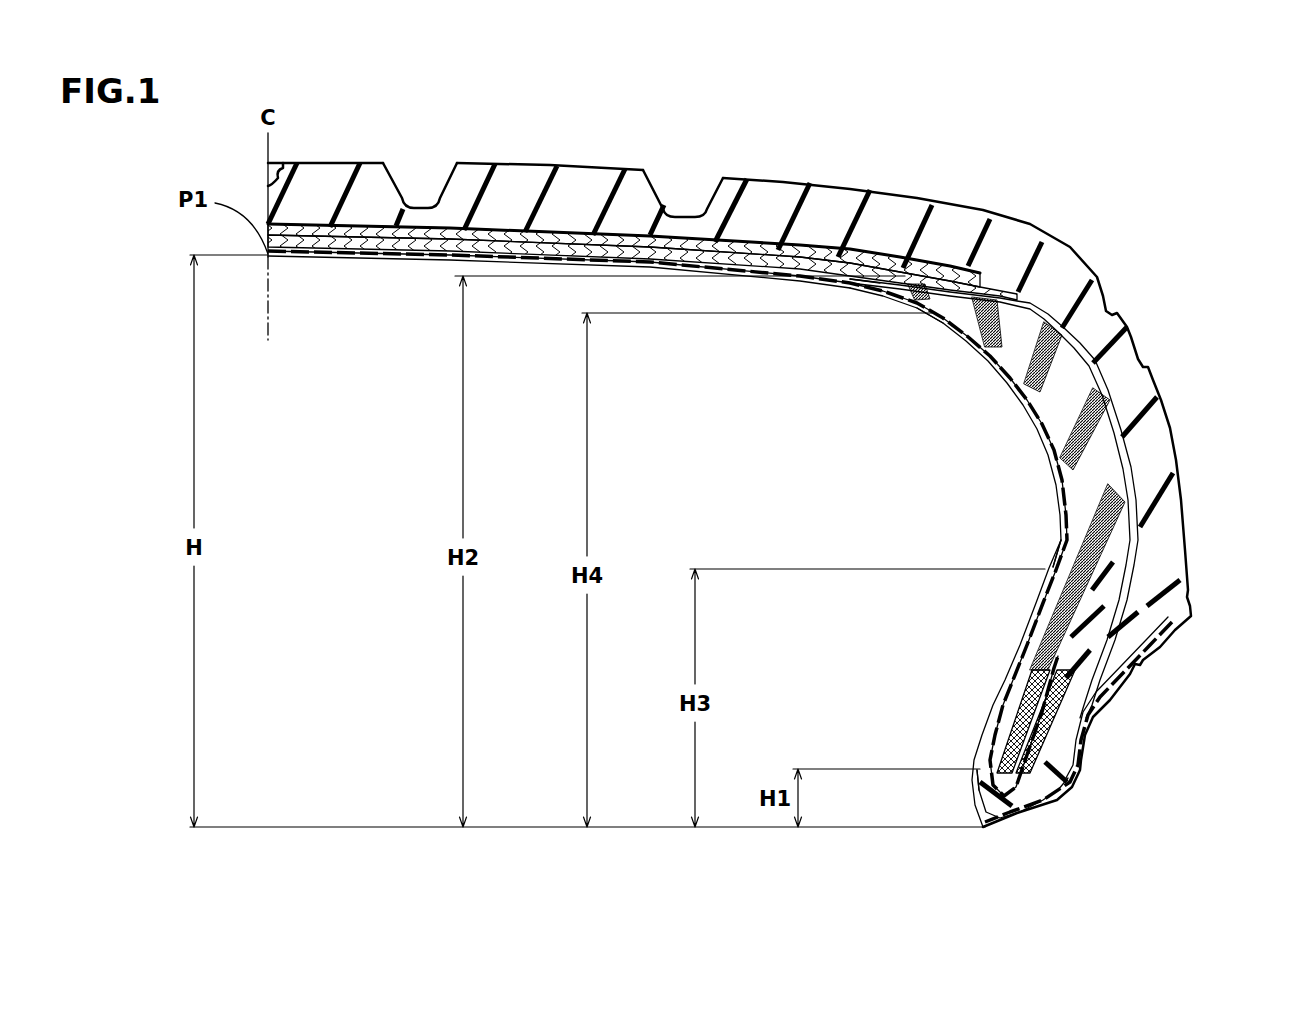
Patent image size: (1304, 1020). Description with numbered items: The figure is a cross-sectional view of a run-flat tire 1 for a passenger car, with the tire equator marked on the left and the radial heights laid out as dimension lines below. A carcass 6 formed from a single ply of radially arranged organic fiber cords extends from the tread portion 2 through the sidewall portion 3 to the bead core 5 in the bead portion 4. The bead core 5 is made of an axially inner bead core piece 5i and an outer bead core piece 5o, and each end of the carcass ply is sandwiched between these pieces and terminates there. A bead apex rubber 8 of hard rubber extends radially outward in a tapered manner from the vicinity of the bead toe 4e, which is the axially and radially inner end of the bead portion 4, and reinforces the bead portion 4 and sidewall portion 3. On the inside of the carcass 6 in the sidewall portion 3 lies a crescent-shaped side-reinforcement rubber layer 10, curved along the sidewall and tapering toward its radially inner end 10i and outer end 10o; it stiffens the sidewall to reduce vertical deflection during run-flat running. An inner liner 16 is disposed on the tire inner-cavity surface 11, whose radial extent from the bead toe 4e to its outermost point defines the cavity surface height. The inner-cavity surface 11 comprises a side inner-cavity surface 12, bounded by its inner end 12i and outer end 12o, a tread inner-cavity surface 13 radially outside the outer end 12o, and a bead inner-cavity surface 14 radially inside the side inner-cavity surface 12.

The run-flat tire 1 is at (1031, 161).
The tread portion 2 is at (800, 178).
The sidewall portion 3 is at (1190, 420).
The bead portion 4 is at (1073, 727).
The bead toe 4e is at (983, 828).
The bead core 5 is at (965, 716).
The inner bead core piece 5i is at (1020, 707).
The outer bead core piece 5o is at (1022, 742).
The carcass 6 is at (402, 248).
The bead apex rubber 8 is at (1047, 780).
The side-reinforcement rubber layer 10 is at (953, 553).
The outer end of side-reinforcement rubber layer 10o is at (850, 279).
The inner end of side-reinforcement rubber layer 10i is at (977, 770).
The tire inner-cavity surface 11 is at (664, 541).
The side inner-cavity surface 12 is at (897, 427).
The outer end of side inner-cavity surface 12o is at (938, 316).
The inner end of side inner-cavity surface 12i is at (1053, 567).
The tread inner-cavity surface 13 is at (693, 262).
The bead inner-cavity surface 14 is at (1003, 703).
The inner liner 16 is at (1057, 453).